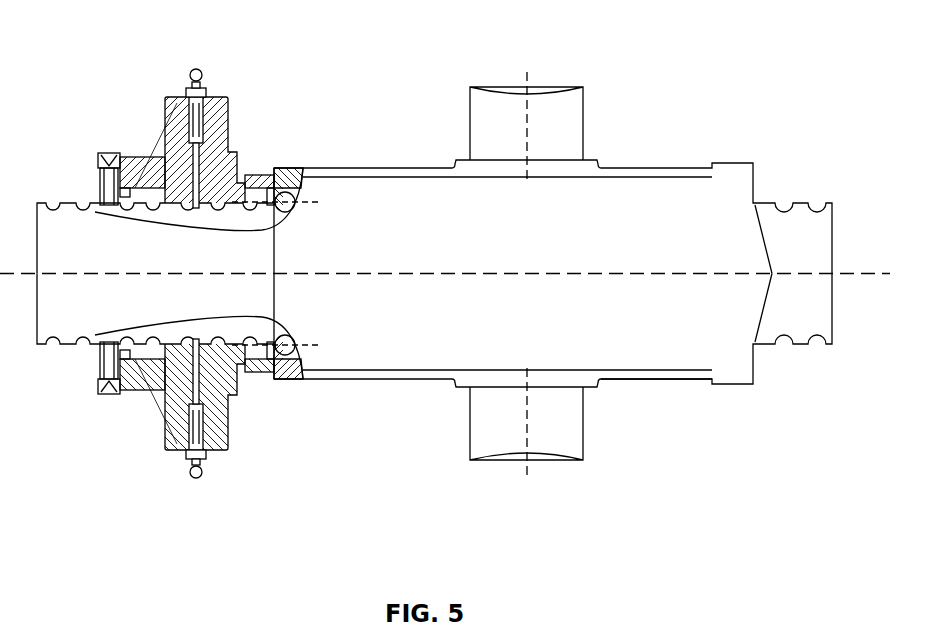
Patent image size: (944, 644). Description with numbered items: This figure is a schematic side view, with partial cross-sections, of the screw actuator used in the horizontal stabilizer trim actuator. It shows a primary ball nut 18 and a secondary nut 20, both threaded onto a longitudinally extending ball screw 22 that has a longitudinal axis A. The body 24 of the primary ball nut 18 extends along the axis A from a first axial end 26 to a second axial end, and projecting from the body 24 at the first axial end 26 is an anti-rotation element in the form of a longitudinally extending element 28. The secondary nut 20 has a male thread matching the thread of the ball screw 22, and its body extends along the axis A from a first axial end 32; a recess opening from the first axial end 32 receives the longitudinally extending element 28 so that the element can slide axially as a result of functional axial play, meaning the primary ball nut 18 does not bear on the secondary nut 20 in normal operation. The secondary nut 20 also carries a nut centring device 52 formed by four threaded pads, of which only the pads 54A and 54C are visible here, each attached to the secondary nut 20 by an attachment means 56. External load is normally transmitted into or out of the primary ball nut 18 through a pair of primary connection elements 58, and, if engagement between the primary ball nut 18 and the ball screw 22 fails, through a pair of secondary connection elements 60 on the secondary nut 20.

The primary ball nut 18 is at (650, 381).
The secondary nut 20 is at (219, 455).
The ball screw 22 is at (780, 216).
The body of the primary ball nut 24 is at (630, 186).
The first axial end 26 is at (296, 164).
The longitudinally extending element 28 is at (248, 175).
The first axial end 32 is at (255, 365).
The nut centring device 52 is at (162, 366).
The threaded pad 54A is at (150, 388).
The threaded pad 54C is at (137, 183).
The attachment means 56 is at (100, 171).
The primary connection elements 58 is at (503, 116).
The secondary connection elements 60 is at (178, 106).
The longitudinal axis A is at (862, 273).